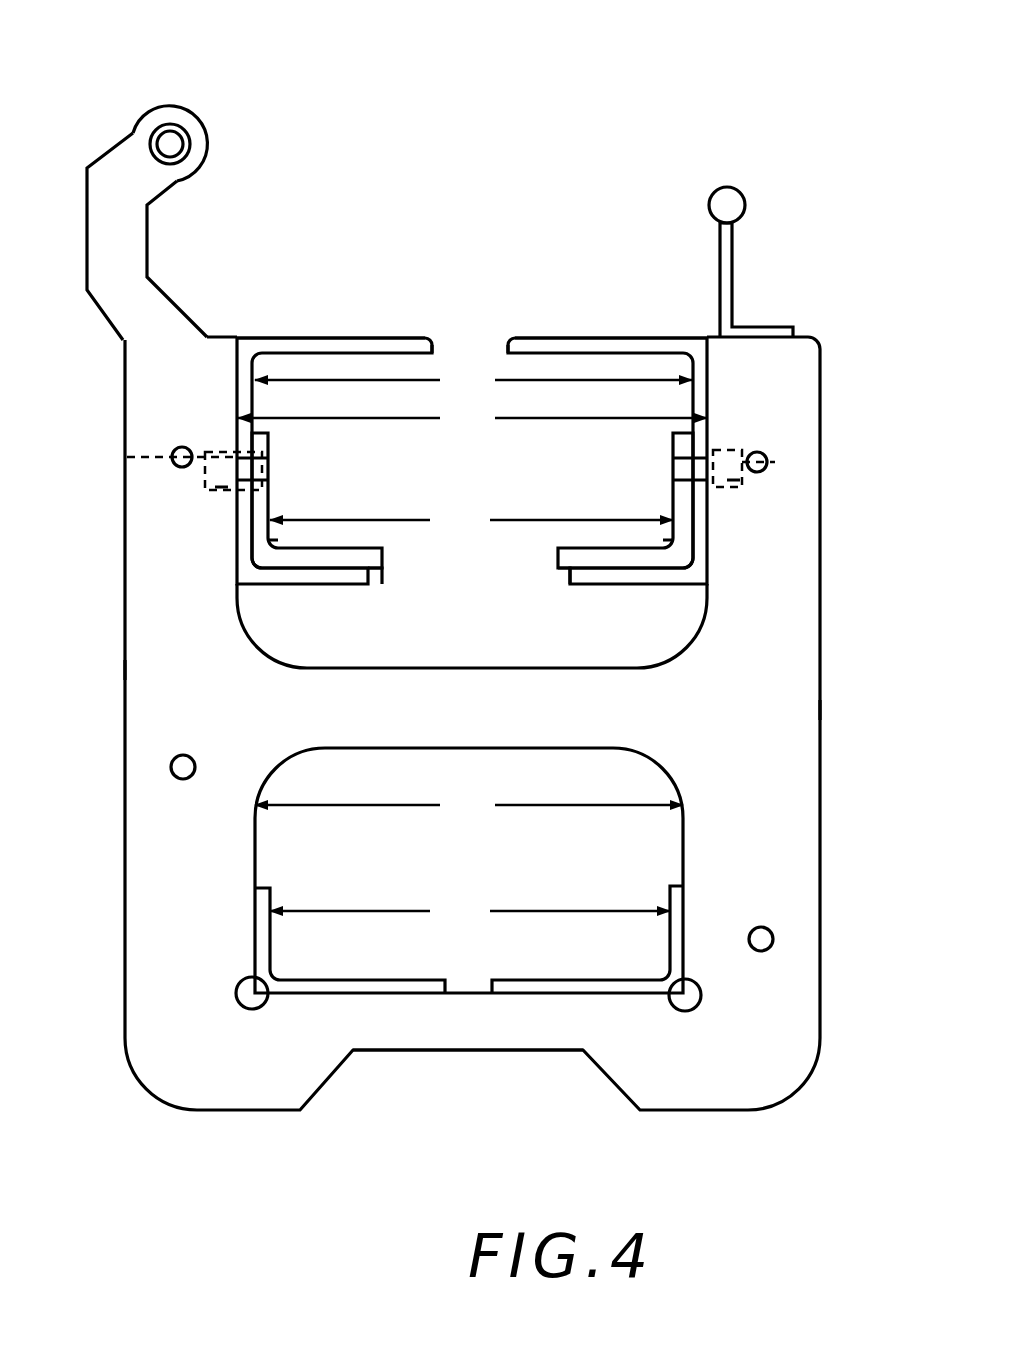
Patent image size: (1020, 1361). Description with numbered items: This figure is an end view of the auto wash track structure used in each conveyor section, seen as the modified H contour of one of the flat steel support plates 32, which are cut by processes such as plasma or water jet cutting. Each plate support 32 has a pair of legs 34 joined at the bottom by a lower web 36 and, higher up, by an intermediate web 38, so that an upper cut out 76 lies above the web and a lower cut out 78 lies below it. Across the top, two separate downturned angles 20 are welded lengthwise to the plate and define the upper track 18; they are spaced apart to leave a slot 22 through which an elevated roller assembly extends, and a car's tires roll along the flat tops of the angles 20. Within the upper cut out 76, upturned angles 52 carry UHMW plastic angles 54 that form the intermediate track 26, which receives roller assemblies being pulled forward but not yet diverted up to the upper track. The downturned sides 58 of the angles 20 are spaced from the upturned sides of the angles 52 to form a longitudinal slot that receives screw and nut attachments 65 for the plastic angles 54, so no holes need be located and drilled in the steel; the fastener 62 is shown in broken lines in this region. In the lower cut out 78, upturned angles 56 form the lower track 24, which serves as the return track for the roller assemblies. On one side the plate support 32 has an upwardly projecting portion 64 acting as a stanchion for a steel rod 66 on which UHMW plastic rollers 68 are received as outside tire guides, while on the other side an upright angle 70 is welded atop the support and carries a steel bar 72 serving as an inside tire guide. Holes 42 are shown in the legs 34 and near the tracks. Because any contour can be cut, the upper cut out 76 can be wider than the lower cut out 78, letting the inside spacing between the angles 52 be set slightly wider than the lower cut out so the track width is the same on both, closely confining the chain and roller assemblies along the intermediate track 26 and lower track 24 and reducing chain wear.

The upper track 18 is at (513, 393).
The angles 20 is at (308, 335).
The slot 22 is at (453, 352).
The lower track 24 is at (469, 947).
The intermediate track 26 is at (415, 500).
The flat steel support plates 32 is at (120, 590).
The legs 34 is at (148, 667).
The lower web 36 is at (480, 1052).
The intermediate web 38 is at (465, 700).
The mounting holes 42 is at (172, 450).
The upturned angles 52 is at (293, 588).
The UHMW plastic angles 54 is at (383, 563).
The upturned angles 56 is at (380, 996).
The downturned sides 58 is at (240, 387).
The fastener bolt 62 is at (227, 463).
The upwardly projecting portions 64 is at (93, 212).
The screw and nut attachments 65 is at (228, 487).
The steel rods 66 is at (175, 140).
The UHMW plastic rollers 68 is at (166, 108).
The upright angle 70 is at (736, 258).
The steel bar 72 is at (725, 185).
The upper cut out 76 is at (452, 593).
The lower cut out 78 is at (367, 866).